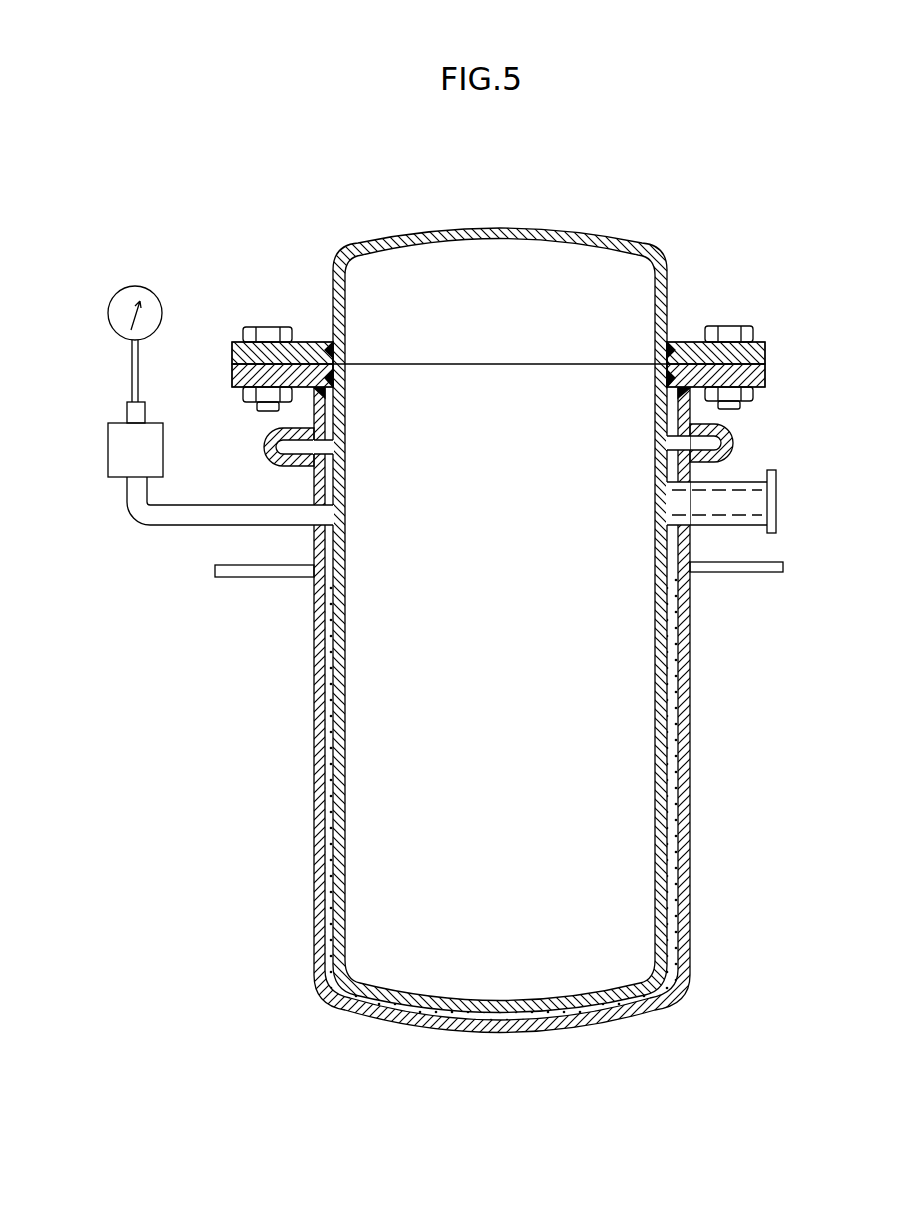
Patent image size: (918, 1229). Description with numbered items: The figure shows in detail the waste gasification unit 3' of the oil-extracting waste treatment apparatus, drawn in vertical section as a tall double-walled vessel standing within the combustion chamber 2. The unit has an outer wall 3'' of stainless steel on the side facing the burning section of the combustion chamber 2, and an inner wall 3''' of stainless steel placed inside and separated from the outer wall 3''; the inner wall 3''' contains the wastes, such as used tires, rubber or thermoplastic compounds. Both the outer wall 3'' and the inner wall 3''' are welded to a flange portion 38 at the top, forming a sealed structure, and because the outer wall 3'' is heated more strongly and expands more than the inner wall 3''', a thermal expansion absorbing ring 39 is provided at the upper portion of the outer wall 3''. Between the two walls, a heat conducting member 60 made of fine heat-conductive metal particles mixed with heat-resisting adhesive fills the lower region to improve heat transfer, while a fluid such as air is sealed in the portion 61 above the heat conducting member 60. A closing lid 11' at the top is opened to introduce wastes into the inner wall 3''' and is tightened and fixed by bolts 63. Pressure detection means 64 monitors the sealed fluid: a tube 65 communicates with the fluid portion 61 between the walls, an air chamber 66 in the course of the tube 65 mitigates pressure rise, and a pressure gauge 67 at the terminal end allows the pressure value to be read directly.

The combustion chamber 2 is at (280, 738).
The waste gasification unit 3' is at (500, 600).
The outer wall 3'' is at (472, 710).
The inner wall 3''' is at (399, 715).
The closing lid 11' is at (500, 586).
The flange portion 38 is at (679, 370).
The thermal expansion absorbing ring 39 is at (266, 447).
The heat conducting member 60 is at (332, 803).
The fluid portion 61 is at (330, 516).
The bolts 63 is at (275, 335).
The pressure detection means 64 is at (118, 503).
The tube 65 is at (185, 518).
The air chamber 66 is at (118, 458).
The pressure gauge 67 is at (148, 290).